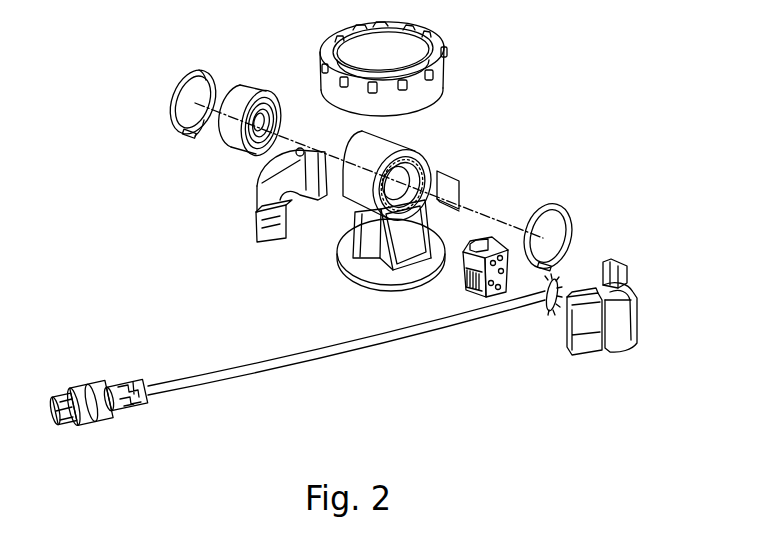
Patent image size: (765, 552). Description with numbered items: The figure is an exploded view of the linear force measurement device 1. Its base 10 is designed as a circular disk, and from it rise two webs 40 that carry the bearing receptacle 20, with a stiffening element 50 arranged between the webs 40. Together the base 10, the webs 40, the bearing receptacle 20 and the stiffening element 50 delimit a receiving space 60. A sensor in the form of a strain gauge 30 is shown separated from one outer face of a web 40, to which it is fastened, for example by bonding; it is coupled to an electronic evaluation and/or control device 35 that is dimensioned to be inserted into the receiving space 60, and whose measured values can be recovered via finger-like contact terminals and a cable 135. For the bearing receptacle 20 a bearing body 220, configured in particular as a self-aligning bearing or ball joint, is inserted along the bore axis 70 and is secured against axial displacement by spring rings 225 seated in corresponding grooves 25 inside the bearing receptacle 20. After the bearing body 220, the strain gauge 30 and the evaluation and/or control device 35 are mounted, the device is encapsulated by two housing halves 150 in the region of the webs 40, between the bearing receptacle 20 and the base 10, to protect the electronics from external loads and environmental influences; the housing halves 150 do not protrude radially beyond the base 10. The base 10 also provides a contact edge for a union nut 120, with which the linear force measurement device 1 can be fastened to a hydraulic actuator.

The linear force measurement device 1 is at (575, 119).
The base 10 is at (350, 258).
The bearing receptacle 20 is at (415, 165).
The grooves 25 is at (432, 160).
The strain gauge 30 is at (460, 187).
The electronic evaluation and/or control device 35 is at (446, 285).
The webs 40 is at (356, 240).
The stiffening element 50 is at (385, 270).
The receiving space 60 is at (395, 262).
The bore axis 70 is at (483, 213).
The union nut 120 is at (438, 80).
The cable 135 is at (196, 380).
The housing halves 150 is at (263, 179).
The bearing body 220 is at (232, 156).
The spring rings 225 is at (181, 140).